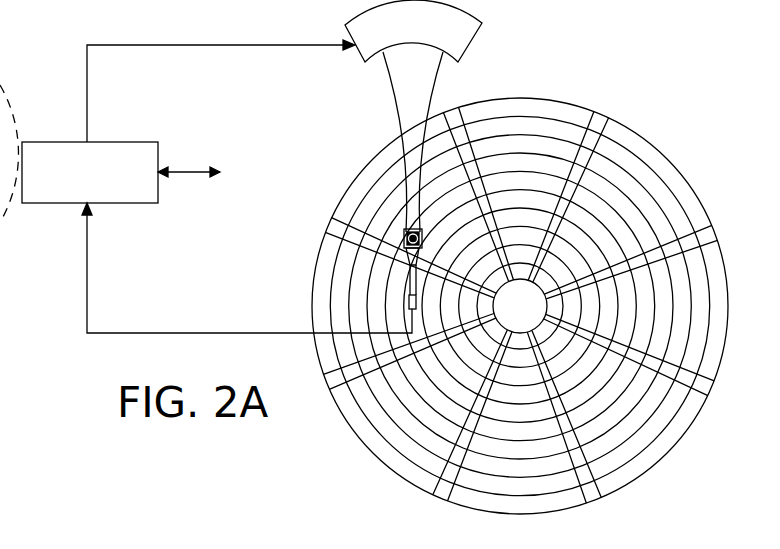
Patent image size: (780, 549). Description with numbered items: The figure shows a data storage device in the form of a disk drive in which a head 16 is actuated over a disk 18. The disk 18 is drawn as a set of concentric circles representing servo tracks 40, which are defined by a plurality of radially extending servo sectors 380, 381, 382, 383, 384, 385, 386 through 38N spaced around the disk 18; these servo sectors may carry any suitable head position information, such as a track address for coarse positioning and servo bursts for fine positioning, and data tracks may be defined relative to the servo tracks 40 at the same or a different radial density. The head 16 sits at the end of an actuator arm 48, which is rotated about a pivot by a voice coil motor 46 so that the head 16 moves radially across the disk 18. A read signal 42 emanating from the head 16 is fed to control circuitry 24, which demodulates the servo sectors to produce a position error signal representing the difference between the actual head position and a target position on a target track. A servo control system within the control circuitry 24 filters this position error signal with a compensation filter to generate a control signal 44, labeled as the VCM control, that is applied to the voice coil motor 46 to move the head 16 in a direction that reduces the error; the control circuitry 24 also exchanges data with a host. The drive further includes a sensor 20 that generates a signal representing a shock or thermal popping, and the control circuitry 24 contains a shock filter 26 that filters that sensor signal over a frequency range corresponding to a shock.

The disk 18 is at (664, 147).
The servo tracks 40 is at (505, 123).
The servo sector 38N is at (451, 118).
The servo sector 380 is at (601, 120).
The servo sector 381 is at (706, 232).
The servo sector 382 is at (709, 392).
The servo sector 383 is at (592, 493).
The servo sector 384 is at (440, 493).
The servo sector 385 is at (336, 385).
The servo sector 386 is at (336, 226).
The voice coil motor 46 is at (362, 48).
The actuator arm 48 is at (396, 107).
The head 16 is at (408, 300).
The control circuitry 24 is at (126, 142).
The control signal 44 is at (87, 77).
The read signal 42 is at (233, 333).
The sensor 20 is at (71, 546).
The shock filter 26 is at (168, 548).